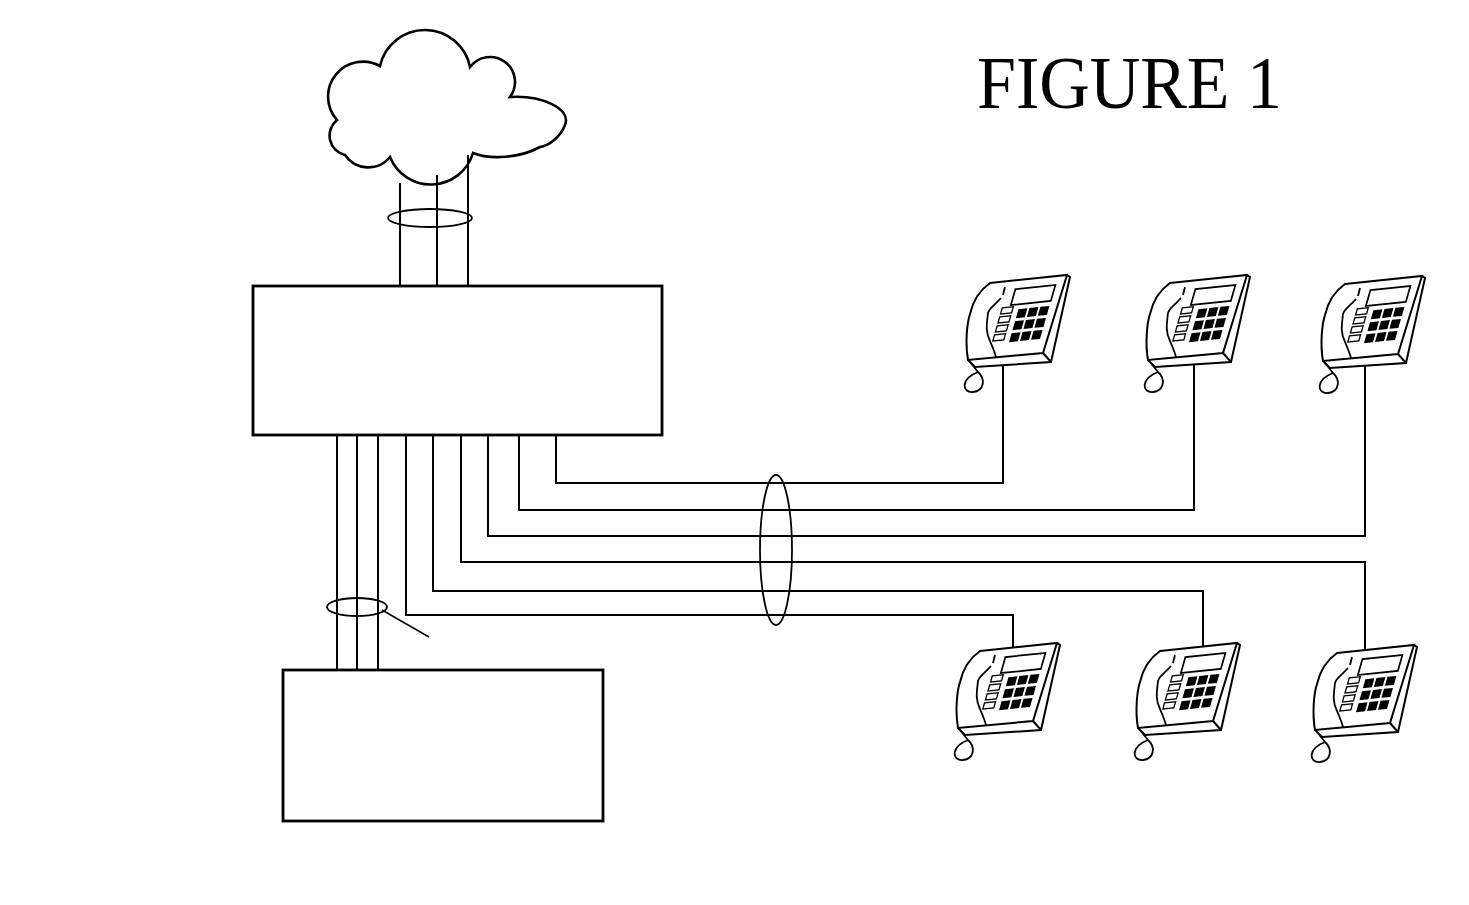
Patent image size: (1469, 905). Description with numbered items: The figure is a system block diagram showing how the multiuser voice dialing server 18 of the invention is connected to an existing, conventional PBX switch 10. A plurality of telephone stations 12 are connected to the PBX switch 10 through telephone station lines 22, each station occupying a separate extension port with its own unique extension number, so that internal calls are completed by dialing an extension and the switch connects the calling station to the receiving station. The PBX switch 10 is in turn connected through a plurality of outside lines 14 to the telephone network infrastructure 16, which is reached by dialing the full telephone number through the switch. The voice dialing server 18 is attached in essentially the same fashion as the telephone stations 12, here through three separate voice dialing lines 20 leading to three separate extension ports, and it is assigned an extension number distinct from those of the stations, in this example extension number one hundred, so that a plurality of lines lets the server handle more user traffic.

The PBX switch 10 is at (642, 352).
The telephone stations 12 is at (1378, 272).
The outside lines 14 is at (472, 218).
The telephone network infrastructure 16 is at (513, 97).
The multiuser voice dialing server 18 is at (603, 724).
The voice dialing lines 20 is at (327, 605).
The telephone station lines 22 is at (776, 476).